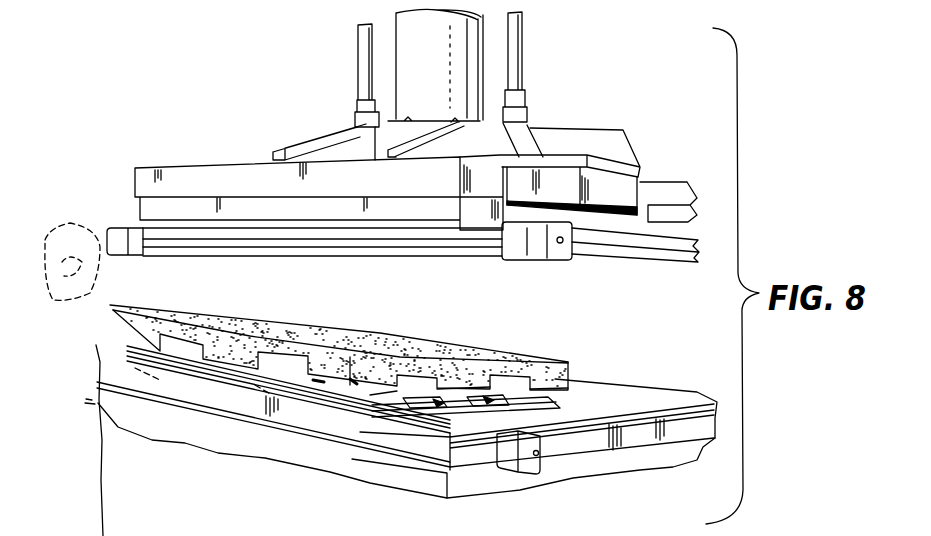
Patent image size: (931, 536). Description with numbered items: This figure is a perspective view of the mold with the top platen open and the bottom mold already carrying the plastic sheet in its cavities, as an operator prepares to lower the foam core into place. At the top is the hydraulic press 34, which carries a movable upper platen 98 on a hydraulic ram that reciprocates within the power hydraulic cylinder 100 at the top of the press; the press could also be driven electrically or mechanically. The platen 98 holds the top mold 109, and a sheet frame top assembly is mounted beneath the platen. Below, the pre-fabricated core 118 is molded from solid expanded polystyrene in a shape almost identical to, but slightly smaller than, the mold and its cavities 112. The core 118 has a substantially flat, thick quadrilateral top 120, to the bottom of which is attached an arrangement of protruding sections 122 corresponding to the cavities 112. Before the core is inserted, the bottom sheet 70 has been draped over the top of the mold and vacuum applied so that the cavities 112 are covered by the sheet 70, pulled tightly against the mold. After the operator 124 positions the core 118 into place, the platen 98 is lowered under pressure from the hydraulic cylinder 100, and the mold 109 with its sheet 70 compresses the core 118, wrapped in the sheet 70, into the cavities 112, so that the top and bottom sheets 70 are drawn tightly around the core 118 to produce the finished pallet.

The hydraulic press 34 is at (562, 92).
The hydraulic cylinder 100 is at (486, 42).
The upper platen 98 is at (188, 178).
The top mold 109 is at (244, 252).
The pre-fabricated core 118 is at (478, 345).
The top 120 is at (547, 368).
The protruding sections 122 is at (540, 385).
The cavities 112 is at (488, 400).
The sheet 70 is at (553, 403).
The operator 124 is at (87, 463).